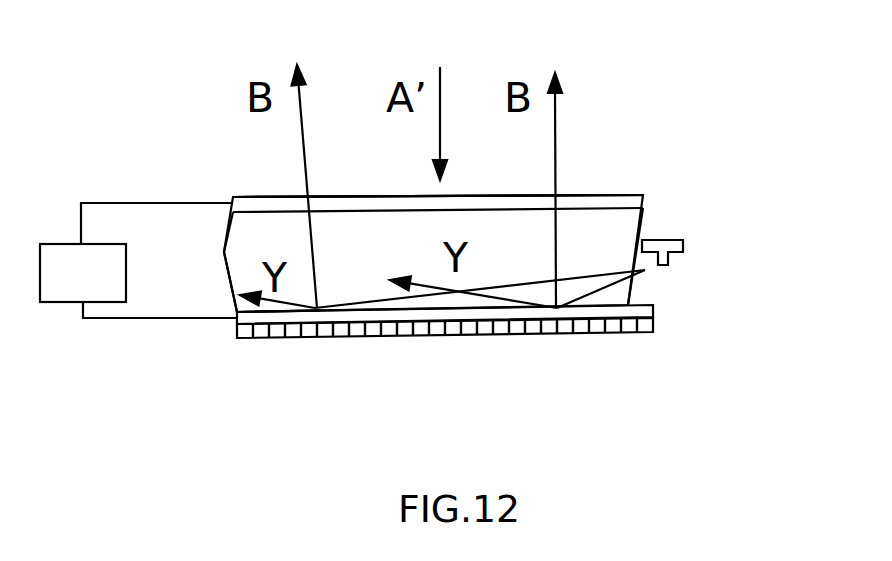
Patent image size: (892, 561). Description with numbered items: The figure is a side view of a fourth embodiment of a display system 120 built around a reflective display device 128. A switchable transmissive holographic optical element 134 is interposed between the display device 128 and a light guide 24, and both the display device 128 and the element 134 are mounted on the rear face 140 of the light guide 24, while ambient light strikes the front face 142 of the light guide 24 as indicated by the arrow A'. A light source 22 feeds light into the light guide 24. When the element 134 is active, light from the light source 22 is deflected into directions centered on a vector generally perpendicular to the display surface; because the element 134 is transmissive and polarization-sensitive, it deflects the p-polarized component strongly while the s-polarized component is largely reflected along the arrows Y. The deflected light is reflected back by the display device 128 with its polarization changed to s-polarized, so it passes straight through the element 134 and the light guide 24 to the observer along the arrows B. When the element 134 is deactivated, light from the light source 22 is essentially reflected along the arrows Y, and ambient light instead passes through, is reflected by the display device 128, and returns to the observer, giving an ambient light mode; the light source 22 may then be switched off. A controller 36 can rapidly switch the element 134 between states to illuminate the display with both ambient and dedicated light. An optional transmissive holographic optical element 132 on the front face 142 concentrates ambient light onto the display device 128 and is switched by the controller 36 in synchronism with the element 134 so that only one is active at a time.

The display system 120 is at (623, 100).
The front face 142 is at (582, 208).
The transmissive holographic optical element 132 is at (643, 195).
The light guide 24 is at (632, 230).
The light source 22 is at (685, 248).
The switchable transmissive holographic optical element 134 is at (653, 310).
The reflective display device 128 is at (617, 335).
The rear face 140 is at (275, 312).
The controller 36 is at (75, 290).